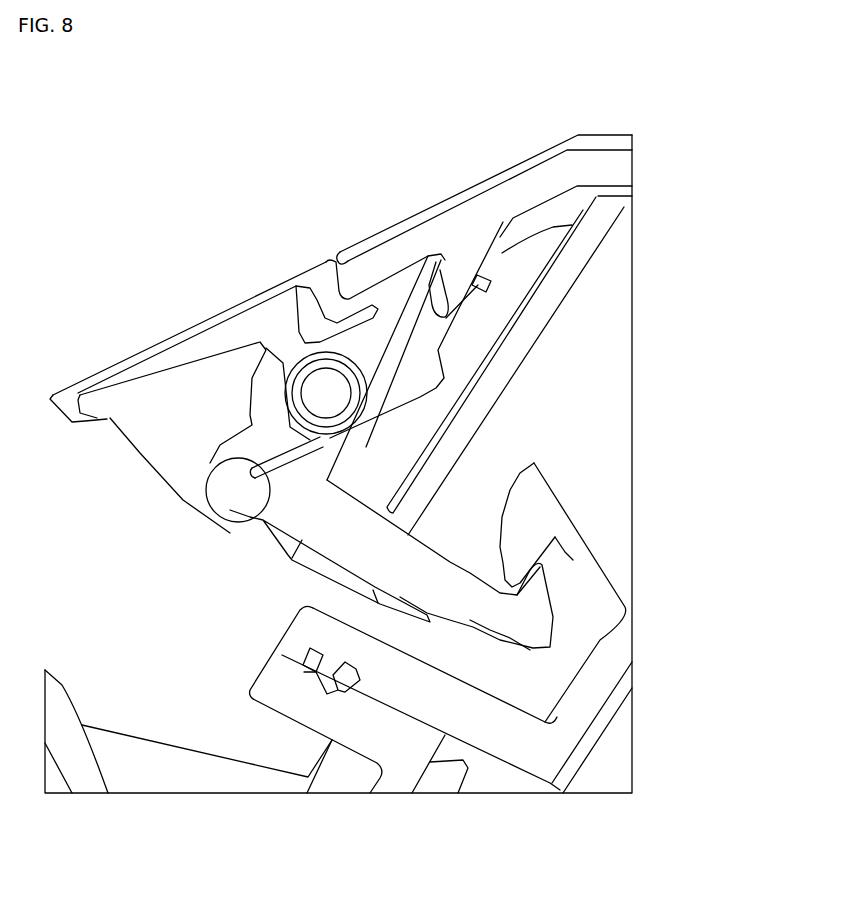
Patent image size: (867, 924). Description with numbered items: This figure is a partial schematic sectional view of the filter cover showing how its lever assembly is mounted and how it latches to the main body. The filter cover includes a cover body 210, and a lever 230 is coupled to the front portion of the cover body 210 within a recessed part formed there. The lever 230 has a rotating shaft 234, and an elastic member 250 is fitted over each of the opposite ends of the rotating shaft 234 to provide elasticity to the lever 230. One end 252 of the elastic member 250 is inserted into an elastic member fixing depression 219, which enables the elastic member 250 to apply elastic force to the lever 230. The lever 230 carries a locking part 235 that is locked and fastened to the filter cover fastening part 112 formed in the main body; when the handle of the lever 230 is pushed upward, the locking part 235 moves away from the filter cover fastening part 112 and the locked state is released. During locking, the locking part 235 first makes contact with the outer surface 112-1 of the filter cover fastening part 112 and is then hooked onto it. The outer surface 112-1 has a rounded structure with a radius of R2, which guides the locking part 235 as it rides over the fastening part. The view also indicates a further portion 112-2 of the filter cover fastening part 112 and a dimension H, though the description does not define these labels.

The cover body 210 is at (457, 230).
The elastic member 250 is at (300, 325).
The lever 230 is at (91, 372).
The rotating shaft 234 is at (327, 393).
The outer surface 112-1 is at (523, 520).
The second hook portion 112-2 is at (573, 560).
The filter cover fastening part 112 is at (731, 480).
The locking part 235 is at (537, 612).
The elastic member fixing depression 219 is at (217, 462).
The one end of the elastic member 252 is at (233, 533).
The radius R2 is at (503, 561).
The height H is at (18, 422).